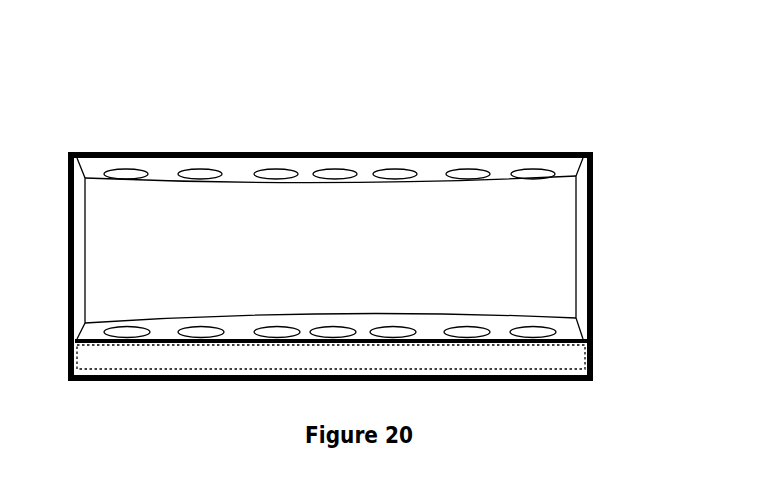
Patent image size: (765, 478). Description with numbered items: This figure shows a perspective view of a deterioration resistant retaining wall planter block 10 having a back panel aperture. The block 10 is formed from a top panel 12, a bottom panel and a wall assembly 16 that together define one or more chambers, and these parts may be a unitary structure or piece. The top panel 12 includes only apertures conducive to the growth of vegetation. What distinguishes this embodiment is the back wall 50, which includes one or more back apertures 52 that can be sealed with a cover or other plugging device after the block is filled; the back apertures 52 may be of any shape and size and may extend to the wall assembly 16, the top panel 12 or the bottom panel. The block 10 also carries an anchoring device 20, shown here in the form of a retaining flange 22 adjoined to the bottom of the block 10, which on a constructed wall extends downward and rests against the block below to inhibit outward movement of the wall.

The retaining wall planter block 10 is at (127, 120).
The top panel 12 is at (525, 153).
The wall assembly 16 is at (594, 211).
The back wall 50 is at (292, 156).
The back aperture 52 is at (377, 203).
The anchoring device 20 is at (367, 361).
The retaining flange 22 is at (432, 360).